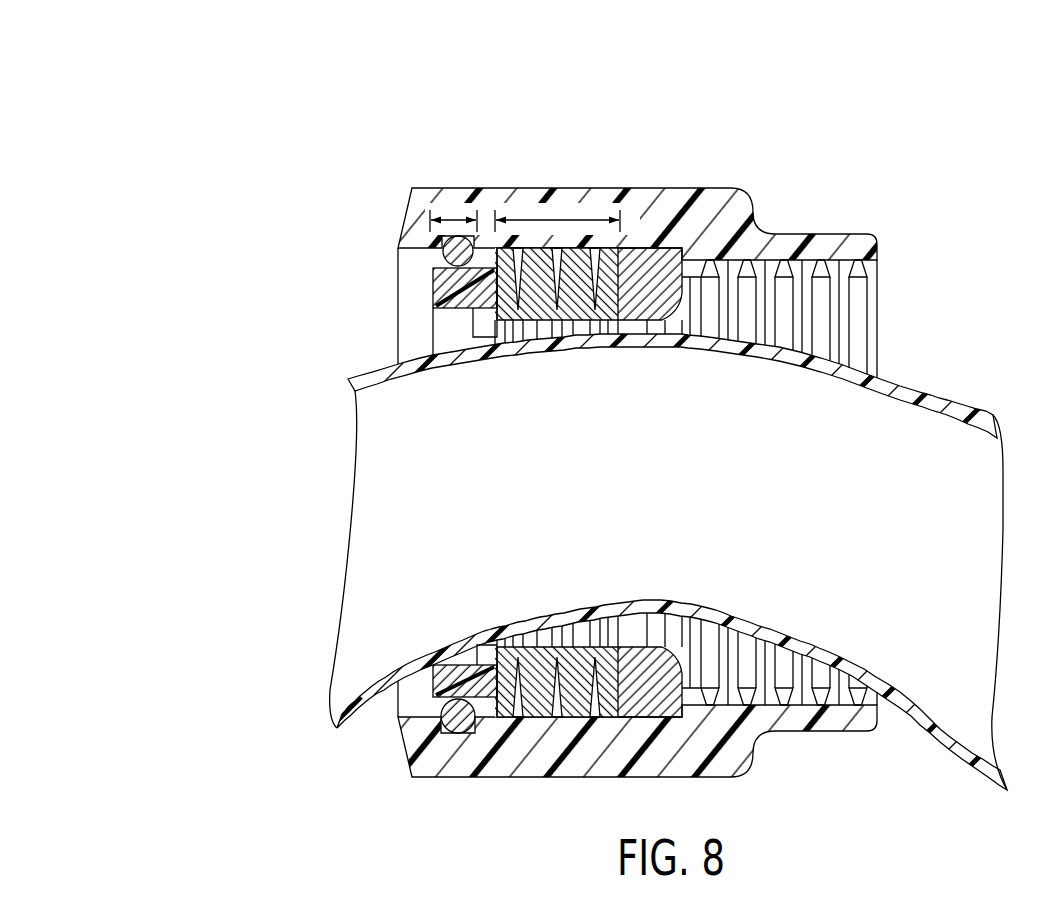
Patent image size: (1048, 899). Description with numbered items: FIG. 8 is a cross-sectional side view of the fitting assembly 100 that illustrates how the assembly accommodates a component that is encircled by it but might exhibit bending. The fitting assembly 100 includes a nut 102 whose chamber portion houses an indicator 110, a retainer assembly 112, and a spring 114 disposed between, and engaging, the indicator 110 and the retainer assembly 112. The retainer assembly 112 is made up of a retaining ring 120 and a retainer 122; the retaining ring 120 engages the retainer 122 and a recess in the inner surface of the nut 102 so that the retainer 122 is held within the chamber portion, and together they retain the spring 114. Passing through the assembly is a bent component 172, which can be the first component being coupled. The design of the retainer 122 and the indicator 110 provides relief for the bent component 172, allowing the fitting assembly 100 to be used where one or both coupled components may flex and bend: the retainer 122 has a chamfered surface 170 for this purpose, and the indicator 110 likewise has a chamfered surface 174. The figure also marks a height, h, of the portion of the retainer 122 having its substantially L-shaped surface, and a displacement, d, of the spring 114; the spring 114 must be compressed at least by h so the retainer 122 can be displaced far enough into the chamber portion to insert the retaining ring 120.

The fitting assembly 100 is at (193, 112).
The nut 102 is at (833, 247).
The indicator 110 is at (588, 482).
The retainer assembly 112 is at (477, 178).
The spring 114 is at (567, 326).
The retaining ring 120 is at (430, 243).
The retainer 122 is at (497, 300).
The chamfered surface 170 is at (447, 306).
The bent component 172 is at (922, 420).
The chamfered surface 174 is at (688, 333).